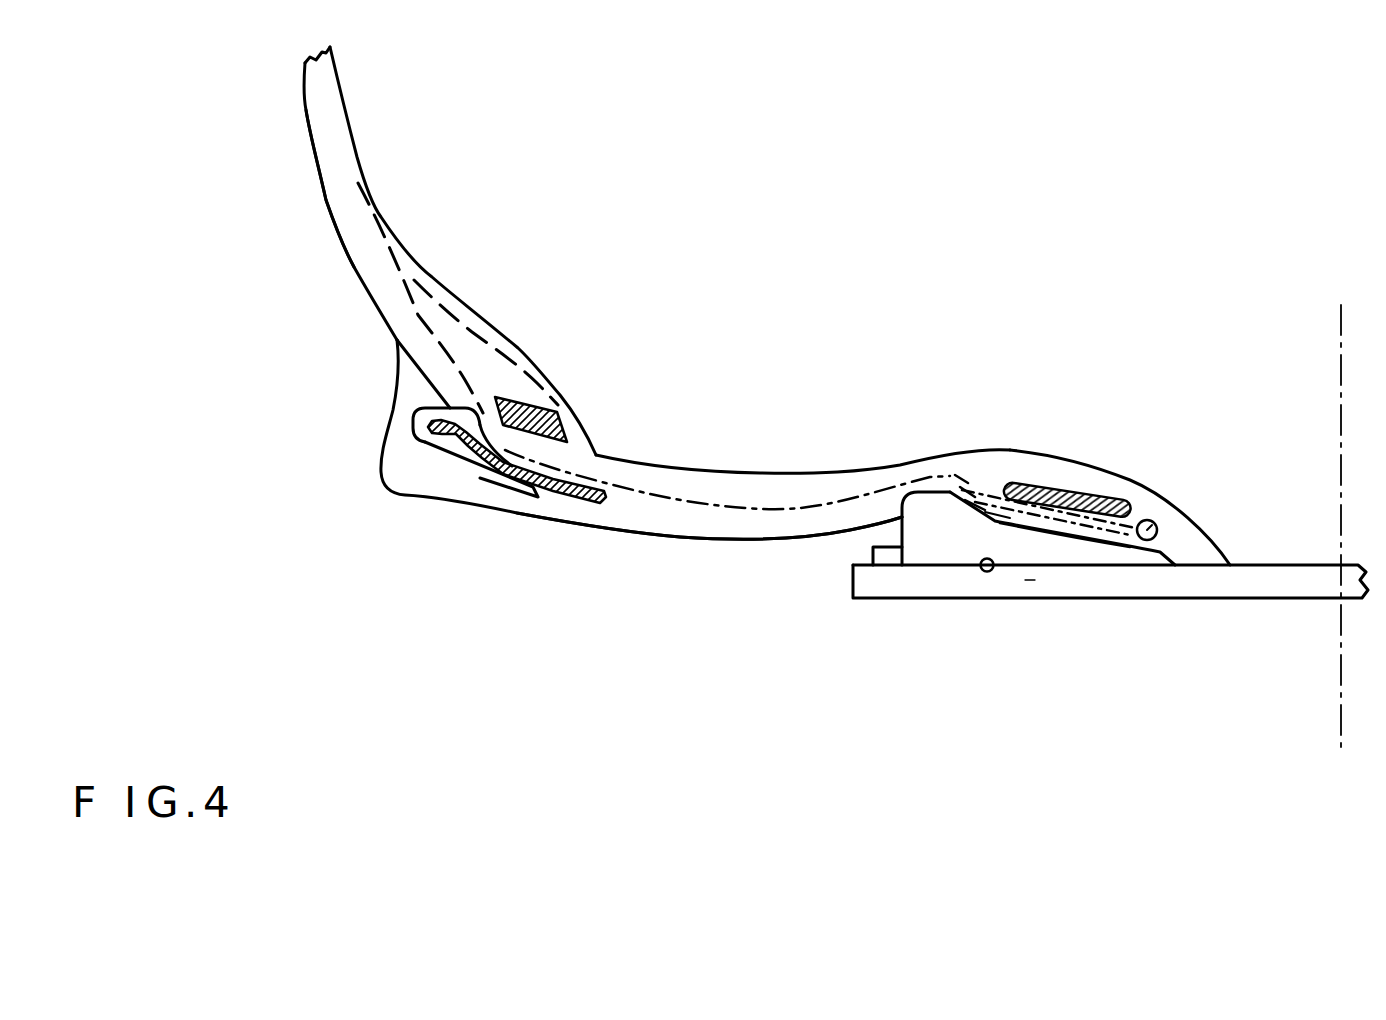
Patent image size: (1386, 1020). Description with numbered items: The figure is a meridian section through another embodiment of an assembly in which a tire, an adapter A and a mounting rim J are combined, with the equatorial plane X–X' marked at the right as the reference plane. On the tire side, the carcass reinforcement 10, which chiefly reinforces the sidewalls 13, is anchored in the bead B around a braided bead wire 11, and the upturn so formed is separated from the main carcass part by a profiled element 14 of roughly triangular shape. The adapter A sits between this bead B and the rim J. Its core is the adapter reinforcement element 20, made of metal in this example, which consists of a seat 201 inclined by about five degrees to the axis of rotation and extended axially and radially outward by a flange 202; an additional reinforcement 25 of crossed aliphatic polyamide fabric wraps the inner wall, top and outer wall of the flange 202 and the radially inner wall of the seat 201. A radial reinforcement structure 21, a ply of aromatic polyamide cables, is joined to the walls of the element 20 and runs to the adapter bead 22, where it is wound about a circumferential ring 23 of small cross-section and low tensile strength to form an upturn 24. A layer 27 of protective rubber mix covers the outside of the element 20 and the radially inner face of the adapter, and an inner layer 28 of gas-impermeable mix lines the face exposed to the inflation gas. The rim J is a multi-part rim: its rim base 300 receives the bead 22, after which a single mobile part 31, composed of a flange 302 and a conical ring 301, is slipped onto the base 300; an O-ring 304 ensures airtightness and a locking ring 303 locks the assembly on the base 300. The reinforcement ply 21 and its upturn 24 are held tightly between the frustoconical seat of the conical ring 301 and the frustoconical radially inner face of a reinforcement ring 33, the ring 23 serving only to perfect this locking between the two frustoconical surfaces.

The carcass reinforcement 10 is at (377, 217).
The bead wire 11 is at (532, 410).
The sidewalls 13 is at (367, 245).
The profiled elements 14 is at (467, 343).
The adapter reinforcement element 20 is at (485, 480).
The seat 201 is at (571, 490).
The flange 202 is at (437, 446).
The reinforcement structure 21 is at (777, 510).
The adapter bead 22 is at (1163, 493).
The circumferential ring 23 is at (1157, 528).
The upturn 24 is at (960, 507).
The additional reinforcement 25 is at (417, 422).
The layer of protective rubber mix 27 is at (652, 513).
The inner layer 28 is at (698, 488).
The rim base 300 is at (1306, 585).
The conical ring 301 is at (1043, 537).
The flange 302 is at (960, 480).
The locking ring 303 is at (892, 562).
The O-ring 304 is at (986, 572).
The mobile part 31 is at (1117, 537).
The reinforcement ring 33 is at (1076, 489).
The adapter A is at (862, 447).
The bead B is at (462, 218).
The mounting rim J is at (1030, 580).
The equatorial plane X is at (1363, 524).